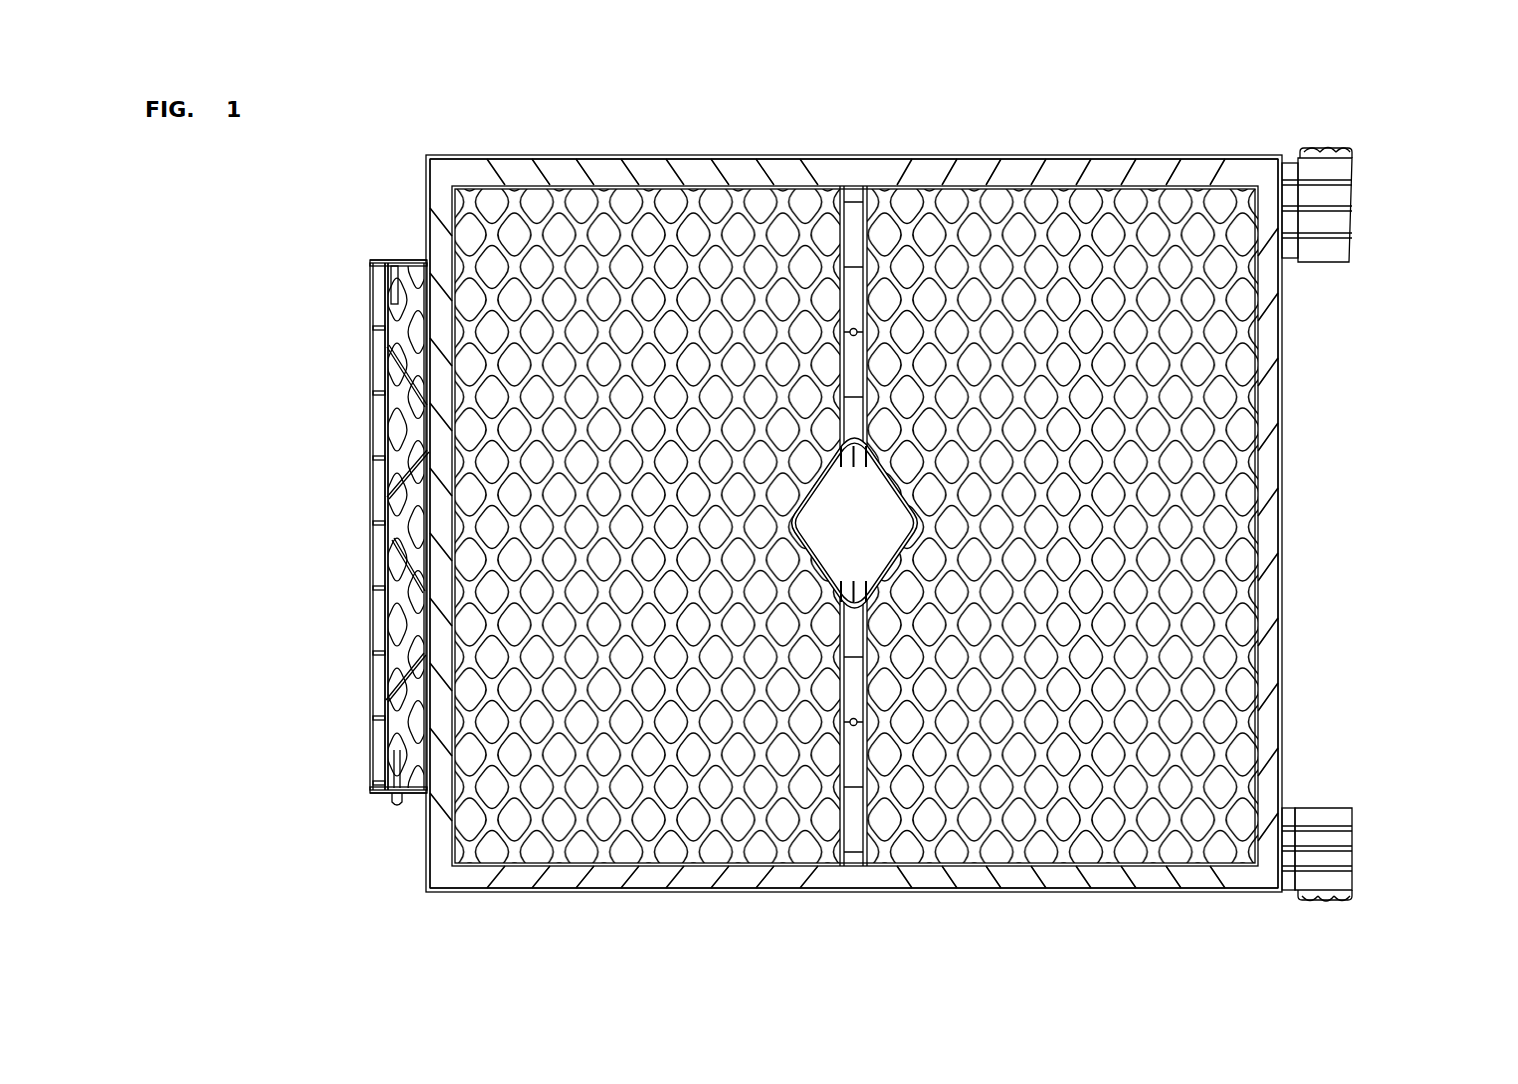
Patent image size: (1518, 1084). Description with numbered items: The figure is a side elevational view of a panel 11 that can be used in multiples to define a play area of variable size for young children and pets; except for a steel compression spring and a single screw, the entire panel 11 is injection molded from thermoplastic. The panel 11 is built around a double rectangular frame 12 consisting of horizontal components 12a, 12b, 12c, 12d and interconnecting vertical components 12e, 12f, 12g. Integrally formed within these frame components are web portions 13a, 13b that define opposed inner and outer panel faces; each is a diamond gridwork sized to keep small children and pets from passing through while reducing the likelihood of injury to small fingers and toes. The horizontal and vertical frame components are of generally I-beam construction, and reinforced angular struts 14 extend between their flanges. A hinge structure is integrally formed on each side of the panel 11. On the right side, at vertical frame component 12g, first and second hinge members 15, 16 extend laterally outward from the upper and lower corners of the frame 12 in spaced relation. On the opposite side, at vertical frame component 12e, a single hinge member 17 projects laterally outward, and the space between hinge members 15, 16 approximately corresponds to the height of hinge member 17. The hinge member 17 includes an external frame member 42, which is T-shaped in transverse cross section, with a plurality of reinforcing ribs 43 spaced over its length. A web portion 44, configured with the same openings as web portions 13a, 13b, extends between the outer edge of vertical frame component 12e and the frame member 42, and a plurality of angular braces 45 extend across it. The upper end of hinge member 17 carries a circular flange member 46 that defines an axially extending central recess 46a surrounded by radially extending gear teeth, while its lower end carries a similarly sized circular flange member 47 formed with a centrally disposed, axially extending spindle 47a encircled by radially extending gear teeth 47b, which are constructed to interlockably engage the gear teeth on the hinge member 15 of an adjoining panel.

The panel 11 is at (1368, 346).
The frame 12 is at (556, 154).
The horizontal frame component 12a is at (690, 156).
The horizontal frame component 12b is at (1020, 158).
The horizontal frame component 12c is at (593, 892).
The horizontal frame component 12d is at (1000, 891).
The vertical frame component 12e is at (440, 238).
The vertical frame component 12f is at (852, 818).
The vertical frame component 12g is at (1268, 665).
The web portion 13a is at (528, 800).
The web portion 13b is at (1135, 805).
The reinforced angular struts 14 is at (1163, 175).
The first hinge member 15 is at (1357, 166).
The second hinge member 16 is at (1357, 855).
The hinge member 17 is at (366, 361).
The external frame member 42 is at (373, 442).
The reinforcing ribs 43 is at (378, 522).
The web portion 44 is at (410, 668).
The angular braces 45 is at (417, 583).
The circular flange member 46 is at (382, 268).
The central recess 46a is at (397, 262).
The circular flange member 47 is at (393, 785).
The spindle 47a is at (398, 806).
The gear teeth 47b is at (392, 797).